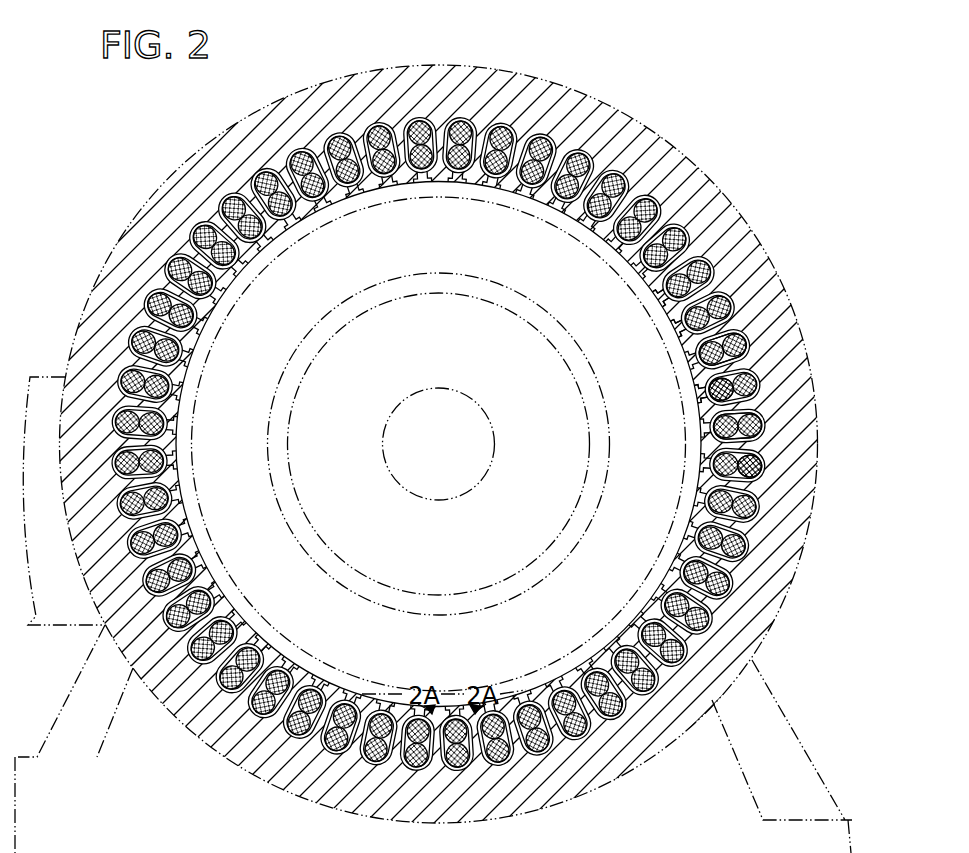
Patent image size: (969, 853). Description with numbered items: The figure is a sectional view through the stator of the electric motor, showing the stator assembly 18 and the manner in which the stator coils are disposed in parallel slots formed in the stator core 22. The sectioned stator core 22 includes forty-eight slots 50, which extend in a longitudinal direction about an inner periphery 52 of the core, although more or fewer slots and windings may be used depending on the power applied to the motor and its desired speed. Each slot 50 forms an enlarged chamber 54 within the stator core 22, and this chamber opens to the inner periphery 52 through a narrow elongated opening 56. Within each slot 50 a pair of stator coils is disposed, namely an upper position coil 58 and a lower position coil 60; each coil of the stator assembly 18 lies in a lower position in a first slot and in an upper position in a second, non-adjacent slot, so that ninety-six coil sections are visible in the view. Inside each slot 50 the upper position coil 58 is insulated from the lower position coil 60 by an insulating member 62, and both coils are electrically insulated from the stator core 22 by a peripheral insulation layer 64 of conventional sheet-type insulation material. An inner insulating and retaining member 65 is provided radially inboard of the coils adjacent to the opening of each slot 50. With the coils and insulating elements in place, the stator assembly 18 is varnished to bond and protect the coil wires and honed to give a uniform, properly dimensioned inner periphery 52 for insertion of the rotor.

The stator assembly 18 is at (675, 91).
The stator core 22 is at (522, 70).
The slots 50 is at (714, 262).
The inner periphery 52 is at (623, 262).
The enlarged chamber 54 is at (718, 362).
The narrow elongated opening 56 is at (680, 372).
The upper position coil 58 is at (722, 376).
The lower position coil 60 is at (703, 383).
The insulating member 62 is at (746, 447).
The peripheral insulation layer 64 is at (764, 428).
The inner insulating and retaining member 65 is at (439, 444).